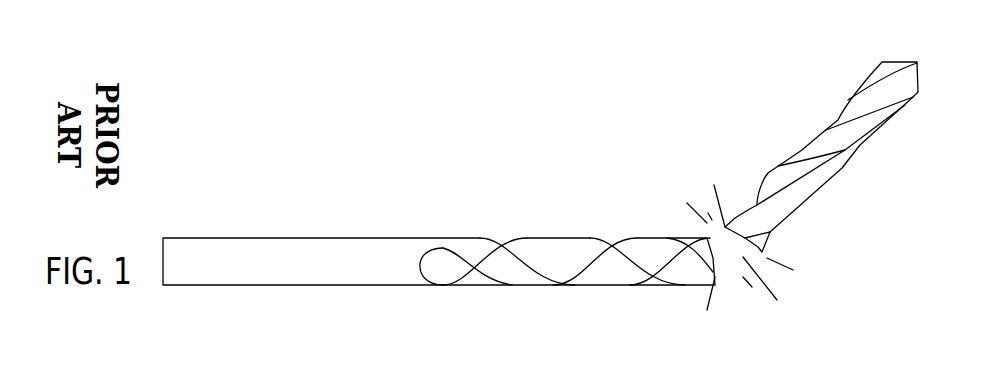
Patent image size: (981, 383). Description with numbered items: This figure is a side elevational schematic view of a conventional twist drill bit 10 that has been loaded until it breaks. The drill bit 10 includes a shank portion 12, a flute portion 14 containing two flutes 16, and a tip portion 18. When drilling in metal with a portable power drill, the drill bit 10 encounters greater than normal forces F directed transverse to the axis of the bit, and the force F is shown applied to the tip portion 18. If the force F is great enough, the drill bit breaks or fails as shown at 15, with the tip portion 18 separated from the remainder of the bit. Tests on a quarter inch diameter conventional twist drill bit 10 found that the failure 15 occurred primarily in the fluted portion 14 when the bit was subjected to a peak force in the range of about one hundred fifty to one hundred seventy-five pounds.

The twist drill bit 10 is at (519, 198).
The shank portion 12 is at (300, 234).
The flute portion 14 is at (609, 233).
The failure 15 is at (741, 259).
The flutes 16 is at (596, 273).
The tip portion 18 is at (895, 56).
The force F is at (915, 116).